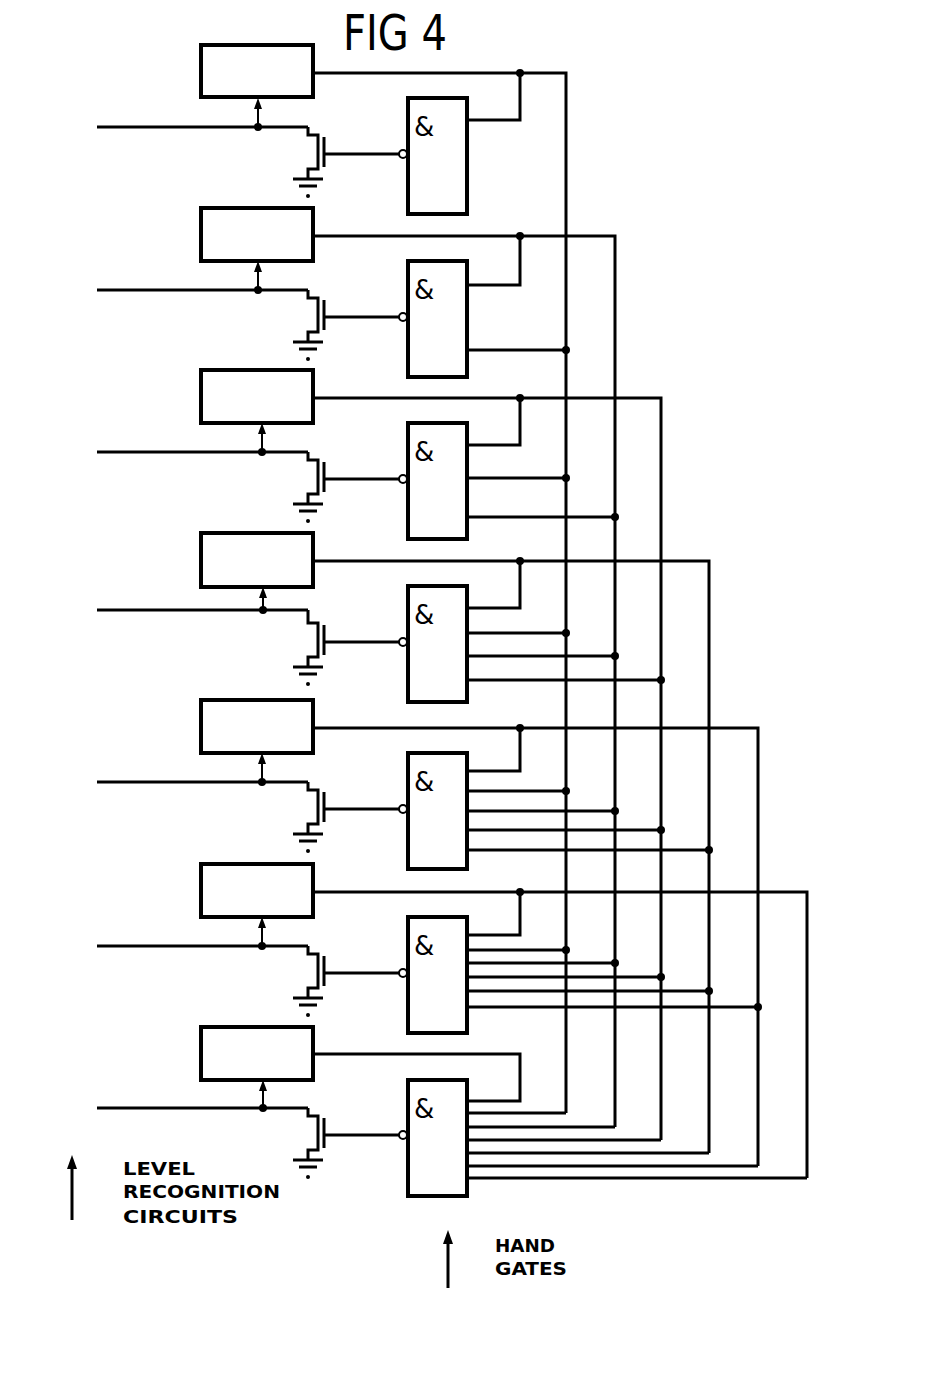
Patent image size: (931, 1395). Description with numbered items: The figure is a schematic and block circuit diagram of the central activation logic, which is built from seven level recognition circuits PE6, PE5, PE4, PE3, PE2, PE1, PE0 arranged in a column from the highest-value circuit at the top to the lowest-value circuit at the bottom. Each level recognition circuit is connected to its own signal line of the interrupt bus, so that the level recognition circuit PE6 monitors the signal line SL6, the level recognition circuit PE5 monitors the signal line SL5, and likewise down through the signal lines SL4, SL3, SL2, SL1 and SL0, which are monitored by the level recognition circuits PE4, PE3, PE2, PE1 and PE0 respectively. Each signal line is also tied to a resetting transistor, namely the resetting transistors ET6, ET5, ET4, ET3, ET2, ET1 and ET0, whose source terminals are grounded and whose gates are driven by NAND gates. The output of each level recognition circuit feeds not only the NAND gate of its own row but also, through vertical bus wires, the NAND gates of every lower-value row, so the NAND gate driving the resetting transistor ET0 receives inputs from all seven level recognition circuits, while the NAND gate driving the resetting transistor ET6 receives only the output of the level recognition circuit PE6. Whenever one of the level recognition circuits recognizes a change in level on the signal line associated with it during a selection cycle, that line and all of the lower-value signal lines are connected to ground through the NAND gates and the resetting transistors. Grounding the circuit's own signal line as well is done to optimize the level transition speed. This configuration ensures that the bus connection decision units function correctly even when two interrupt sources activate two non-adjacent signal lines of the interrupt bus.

The level recognition circuit PE6 is at (383, 579).
The level recognition circuit PE5 is at (408, 667).
The level recognition circuit PE4 is at (431, 755).
The level recognition circuit PE3 is at (455, 843).
The level recognition circuit PE2 is at (479, 933).
The level recognition circuit PE1 is at (504, 1021).
The level recognition circuit PE0 is at (360, 1064).
The signal line SL6 is at (177, 122).
The signal line SL5 is at (177, 285).
The signal line SL4 is at (177, 447).
The signal line SL3 is at (177, 608).
The signal line SL2 is at (177, 777).
The signal line SL1 is at (177, 941).
The signal line SL0 is at (177, 1103).
The resetting transistor ET6 is at (350, 162).
The resetting transistor ET5 is at (350, 325).
The resetting transistor ET4 is at (350, 487).
The resetting transistor ET3 is at (350, 648).
The resetting transistor ET2 is at (350, 817).
The resetting transistor ET1 is at (350, 981).
The resetting transistor ET0 is at (350, 1143).